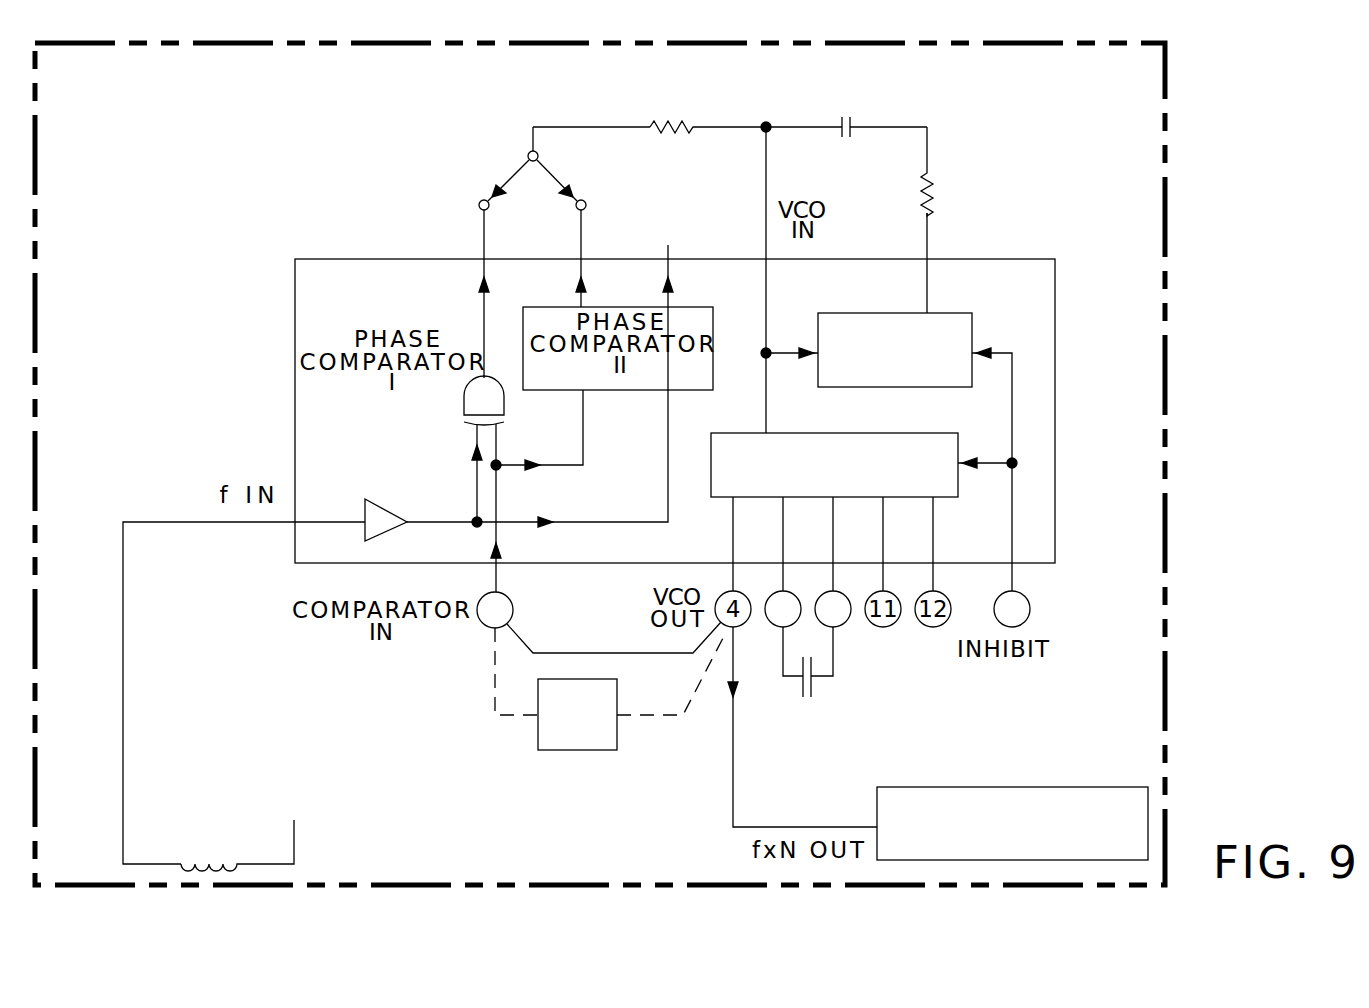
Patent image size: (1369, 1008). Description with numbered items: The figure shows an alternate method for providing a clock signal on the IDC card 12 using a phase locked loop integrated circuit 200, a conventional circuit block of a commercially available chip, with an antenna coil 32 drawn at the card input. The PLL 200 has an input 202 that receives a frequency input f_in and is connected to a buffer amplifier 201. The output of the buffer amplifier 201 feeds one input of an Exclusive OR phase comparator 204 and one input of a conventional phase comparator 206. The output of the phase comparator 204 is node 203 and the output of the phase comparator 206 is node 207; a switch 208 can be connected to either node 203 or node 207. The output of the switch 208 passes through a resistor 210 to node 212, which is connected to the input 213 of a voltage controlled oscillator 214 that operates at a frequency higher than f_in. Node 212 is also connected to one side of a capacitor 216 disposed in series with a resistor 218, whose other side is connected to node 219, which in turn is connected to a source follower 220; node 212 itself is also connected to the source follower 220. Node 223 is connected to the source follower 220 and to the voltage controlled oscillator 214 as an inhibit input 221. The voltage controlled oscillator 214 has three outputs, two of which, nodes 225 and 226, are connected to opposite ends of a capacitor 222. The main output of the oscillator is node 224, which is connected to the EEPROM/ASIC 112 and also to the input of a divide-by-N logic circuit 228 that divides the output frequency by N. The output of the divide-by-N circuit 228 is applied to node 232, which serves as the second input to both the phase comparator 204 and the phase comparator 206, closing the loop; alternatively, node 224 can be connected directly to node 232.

The IDC card 12 is at (1175, 550).
The antenna coil 32 is at (210, 853).
The EEPROM/ASIC 112 is at (992, 783).
The phase locked loop integrated circuit 200 is at (294, 338).
The buffer amplifier 201 is at (377, 497).
The input 202 is at (144, 520).
The node 203 is at (480, 253).
The Exclusive OR phase comparator 204 is at (462, 410).
The phase comparator 206 is at (632, 397).
The node 207 is at (587, 250).
The switch 208 is at (523, 150).
The resistor 210 is at (663, 118).
The node 212 is at (763, 112).
The input 213 is at (763, 428).
The voltage controlled oscillator 214 is at (878, 432).
The capacitor 216 is at (843, 112).
The resistor 218 is at (943, 192).
The node 219 is at (933, 248).
The source follower 220 is at (977, 333).
The inhibit input 221 is at (1015, 402).
The capacitor 222 is at (803, 700).
The node 223 is at (1028, 590).
The node 224 is at (727, 640).
The node 225 is at (773, 633).
The node 226 is at (842, 635).
The divide-by-N logic circuit 228 is at (552, 757).
The node 232 is at (502, 587).